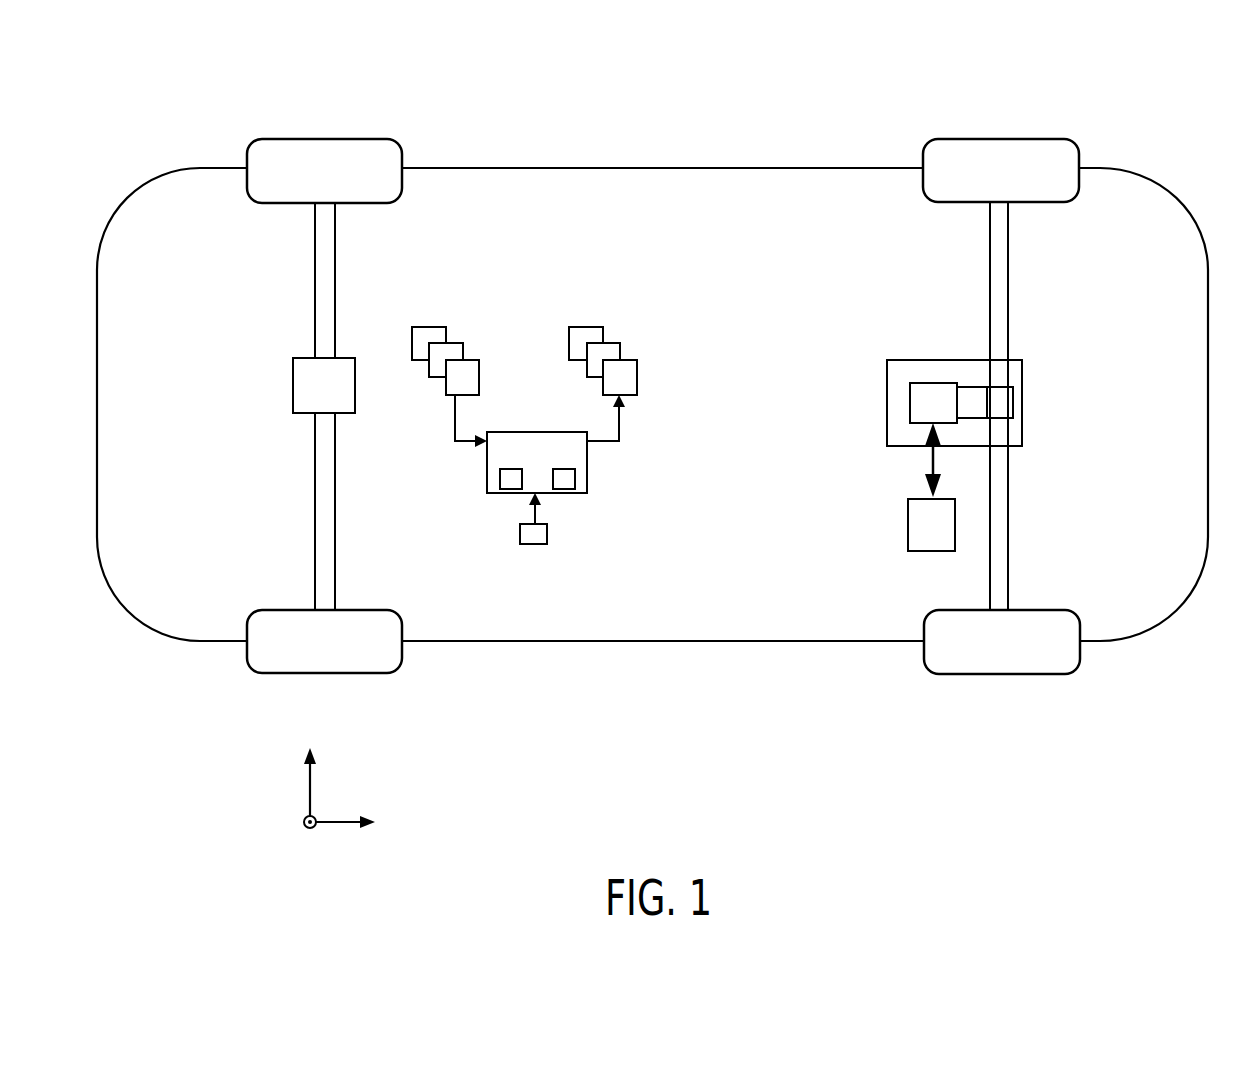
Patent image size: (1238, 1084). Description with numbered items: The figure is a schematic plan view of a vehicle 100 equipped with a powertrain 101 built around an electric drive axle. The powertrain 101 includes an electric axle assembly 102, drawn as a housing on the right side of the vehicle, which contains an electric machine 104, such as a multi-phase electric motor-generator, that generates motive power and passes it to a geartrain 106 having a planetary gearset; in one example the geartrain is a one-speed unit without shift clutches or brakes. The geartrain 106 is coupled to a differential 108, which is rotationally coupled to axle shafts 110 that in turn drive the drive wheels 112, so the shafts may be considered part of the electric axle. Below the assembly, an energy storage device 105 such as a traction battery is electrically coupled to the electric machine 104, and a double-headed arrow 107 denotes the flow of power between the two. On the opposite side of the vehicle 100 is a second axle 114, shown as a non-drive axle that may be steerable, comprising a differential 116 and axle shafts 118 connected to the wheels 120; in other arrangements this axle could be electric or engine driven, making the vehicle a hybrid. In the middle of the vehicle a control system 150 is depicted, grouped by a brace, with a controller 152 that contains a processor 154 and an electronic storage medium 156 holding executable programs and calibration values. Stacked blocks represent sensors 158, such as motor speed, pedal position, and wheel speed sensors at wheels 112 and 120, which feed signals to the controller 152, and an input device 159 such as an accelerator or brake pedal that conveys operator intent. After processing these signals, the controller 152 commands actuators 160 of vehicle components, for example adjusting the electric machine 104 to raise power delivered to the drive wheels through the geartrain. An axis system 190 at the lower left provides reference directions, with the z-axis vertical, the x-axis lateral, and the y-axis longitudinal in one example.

The vehicle 100 is at (1164, 130).
The powertrain 101 is at (952, 406).
The electric axle assembly 102 is at (887, 395).
The electric machine 104 is at (931, 393).
The energy storage device 105 is at (908, 527).
The geartrain 106 is at (970, 403).
The arrow 107 is at (928, 467).
The differential 108 is at (1013, 400).
The axle shafts 110 is at (990, 283).
The drive wheels 112 is at (1018, 181).
The second axle 114 is at (288, 406).
The differential 116 is at (293, 388).
The axle shafts 118 is at (315, 292).
The drive wheels 120 is at (341, 184).
The control system 150 is at (523, 389).
The controller 152 is at (553, 465).
The processor 154 is at (500, 479).
The electronic storage medium 156 is at (575, 479).
The sensors 158 is at (493, 322).
The input device 159 is at (547, 533).
The actuators 160 is at (646, 317).
The axis system 190 is at (385, 757).